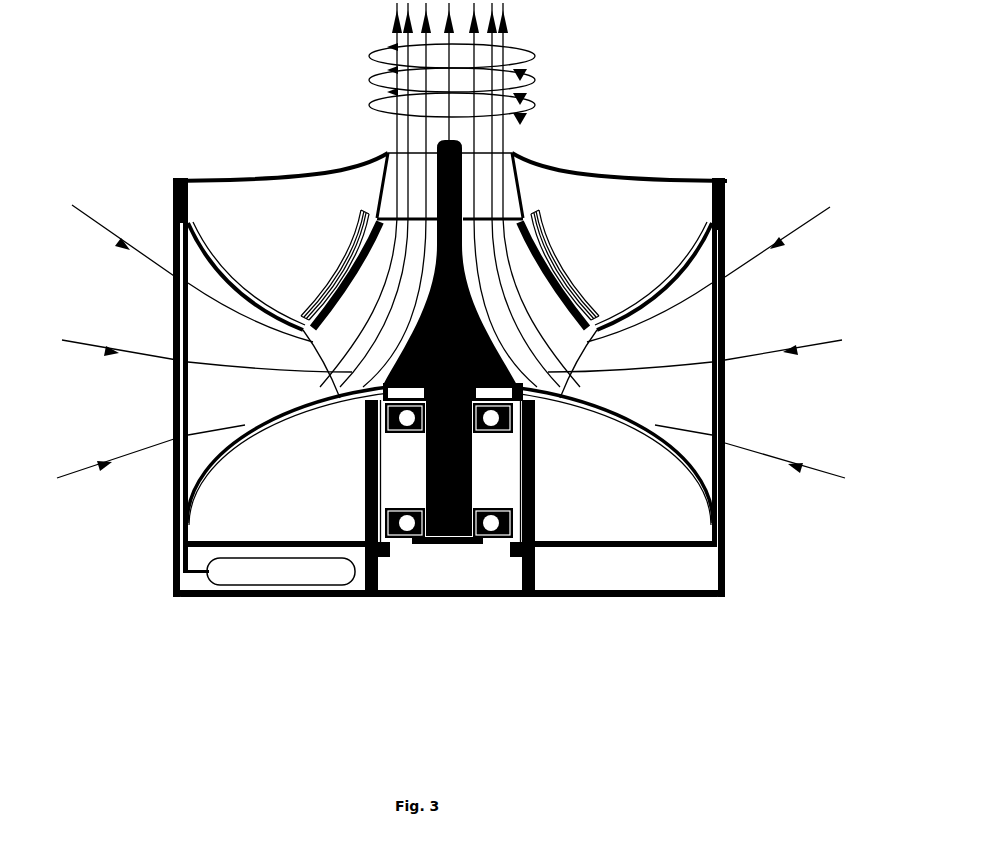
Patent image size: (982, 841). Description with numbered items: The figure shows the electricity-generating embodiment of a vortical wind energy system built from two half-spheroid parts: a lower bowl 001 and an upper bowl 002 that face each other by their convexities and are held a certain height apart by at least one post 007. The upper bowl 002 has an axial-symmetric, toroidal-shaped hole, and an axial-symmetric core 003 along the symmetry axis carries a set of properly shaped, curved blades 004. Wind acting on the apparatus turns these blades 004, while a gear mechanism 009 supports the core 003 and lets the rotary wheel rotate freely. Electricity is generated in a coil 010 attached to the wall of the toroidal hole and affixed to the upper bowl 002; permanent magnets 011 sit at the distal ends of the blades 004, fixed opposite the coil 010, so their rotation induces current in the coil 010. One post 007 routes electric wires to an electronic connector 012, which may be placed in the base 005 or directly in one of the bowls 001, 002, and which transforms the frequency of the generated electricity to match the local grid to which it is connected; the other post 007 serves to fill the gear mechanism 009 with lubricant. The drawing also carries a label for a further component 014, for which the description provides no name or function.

The lower bowl 001 is at (300, 462).
The upper bowl 002 is at (320, 208).
The axial-symmetric core 003 is at (437, 195).
The curved blades 004 is at (315, 297).
The base 005 is at (632, 562).
The post 007 is at (181, 552).
The gear mechanism 009 is at (440, 341).
The coil 010 is at (556, 295).
The permanent magnets 011 is at (578, 300).
The electronic connector 012 is at (253, 573).
The bearings 014 is at (490, 523).